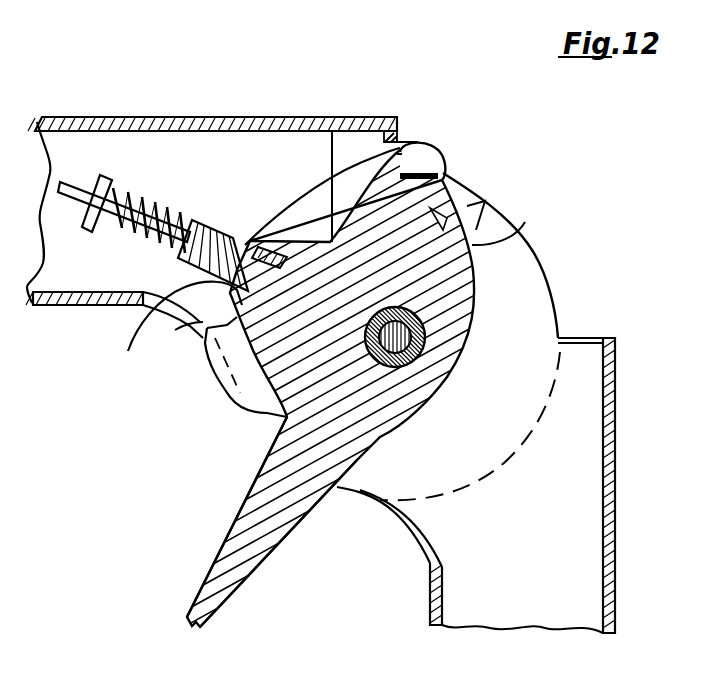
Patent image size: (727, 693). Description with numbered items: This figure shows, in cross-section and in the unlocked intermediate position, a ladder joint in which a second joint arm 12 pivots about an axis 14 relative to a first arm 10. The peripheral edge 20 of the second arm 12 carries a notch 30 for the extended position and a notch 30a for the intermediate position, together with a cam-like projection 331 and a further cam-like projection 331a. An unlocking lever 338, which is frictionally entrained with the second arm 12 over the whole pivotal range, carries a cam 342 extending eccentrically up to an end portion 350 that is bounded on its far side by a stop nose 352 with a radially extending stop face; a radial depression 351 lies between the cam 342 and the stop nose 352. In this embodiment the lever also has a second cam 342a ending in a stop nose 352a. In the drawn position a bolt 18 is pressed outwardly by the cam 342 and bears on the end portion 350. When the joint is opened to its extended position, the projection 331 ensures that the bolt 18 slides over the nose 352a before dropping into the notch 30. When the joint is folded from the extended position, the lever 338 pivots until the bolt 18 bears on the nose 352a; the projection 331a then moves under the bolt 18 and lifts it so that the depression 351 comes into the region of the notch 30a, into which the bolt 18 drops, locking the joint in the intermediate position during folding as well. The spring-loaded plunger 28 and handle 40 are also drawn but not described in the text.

The first arm 10 is at (234, 140).
The second joint arm 12 is at (587, 540).
The axis 14 is at (433, 350).
The bolt 18 is at (212, 220).
The peripheral edge 20 is at (542, 253).
The spring-loaded plunger 28 is at (158, 205).
The notch 30 is at (481, 200).
The notch 30a is at (244, 244).
The lever handle 40 is at (218, 590).
The cam-like projection 331 is at (218, 377).
The further cam-like projection 331a is at (417, 146).
The unlocking lever 338 is at (455, 290).
The cam 342 is at (295, 240).
The second cam 342a is at (525, 222).
The end portion 350 is at (447, 172).
The radial depression 351 is at (333, 135).
The stop nose 352 is at (175, 330).
The stop nose 352a is at (444, 160).